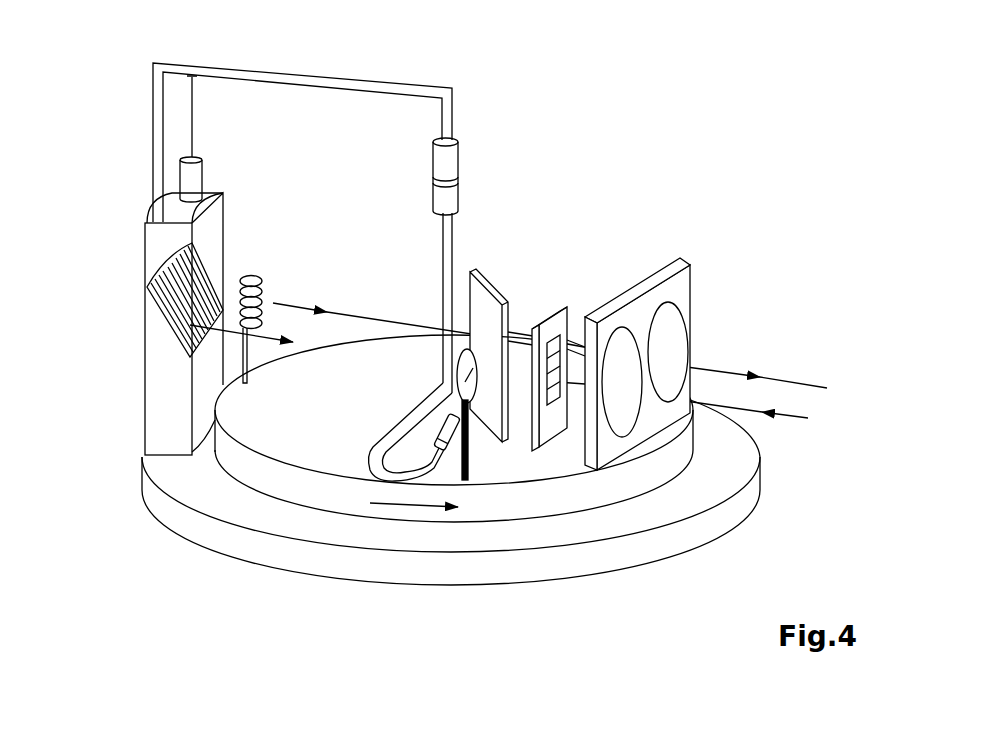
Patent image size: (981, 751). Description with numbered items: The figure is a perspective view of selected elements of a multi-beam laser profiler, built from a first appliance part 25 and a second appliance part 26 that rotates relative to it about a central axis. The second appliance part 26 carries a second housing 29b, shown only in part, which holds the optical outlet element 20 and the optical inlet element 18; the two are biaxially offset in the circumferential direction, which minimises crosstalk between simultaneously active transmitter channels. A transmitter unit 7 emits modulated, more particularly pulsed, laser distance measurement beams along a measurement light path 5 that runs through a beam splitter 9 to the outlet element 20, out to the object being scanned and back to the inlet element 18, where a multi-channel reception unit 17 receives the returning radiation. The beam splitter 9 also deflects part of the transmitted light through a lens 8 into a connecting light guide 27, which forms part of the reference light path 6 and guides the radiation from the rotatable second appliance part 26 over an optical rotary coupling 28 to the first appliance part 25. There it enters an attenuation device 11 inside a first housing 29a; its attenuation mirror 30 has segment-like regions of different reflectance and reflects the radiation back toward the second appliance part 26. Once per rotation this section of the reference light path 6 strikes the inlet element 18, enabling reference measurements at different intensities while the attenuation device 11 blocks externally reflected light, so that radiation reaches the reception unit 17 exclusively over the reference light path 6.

The measurement light path 5 is at (777, 410).
The reference light path 6 is at (306, 248).
The connecting light guide 27 is at (312, 82).
The transmitter unit 7 is at (243, 278).
The lens 8 is at (467, 393).
The beam splitter 9 is at (487, 275).
The attenuation device 11 is at (180, 306).
The reception unit 17 is at (562, 307).
The optical inlet element 18 is at (625, 347).
The optical outlet element 20 is at (677, 338).
The first appliance part 25 is at (188, 525).
The second appliance part 26 is at (627, 483).
The optical rotary coupling 28 is at (417, 185).
The first housing 29a is at (155, 213).
The second housing 29b is at (704, 307).
The attenuation mirror 30 is at (210, 310).